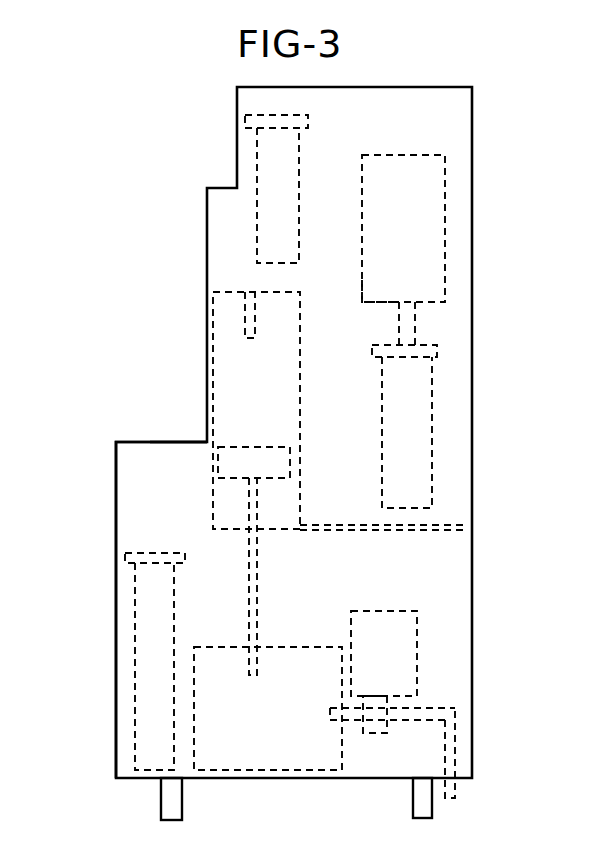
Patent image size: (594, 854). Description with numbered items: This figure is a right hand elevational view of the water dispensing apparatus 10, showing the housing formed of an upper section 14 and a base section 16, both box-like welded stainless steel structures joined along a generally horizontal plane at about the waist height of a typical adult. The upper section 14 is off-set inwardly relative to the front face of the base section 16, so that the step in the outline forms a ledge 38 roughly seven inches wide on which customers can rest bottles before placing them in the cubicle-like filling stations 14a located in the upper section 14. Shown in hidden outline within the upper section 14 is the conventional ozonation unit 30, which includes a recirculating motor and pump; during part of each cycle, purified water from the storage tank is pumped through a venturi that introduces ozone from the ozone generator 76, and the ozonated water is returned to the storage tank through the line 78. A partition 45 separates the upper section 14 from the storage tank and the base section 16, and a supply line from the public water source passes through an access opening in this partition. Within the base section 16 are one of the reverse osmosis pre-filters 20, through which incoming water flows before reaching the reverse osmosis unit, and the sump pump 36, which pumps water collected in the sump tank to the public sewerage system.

The water dispensing apparatus 10 is at (502, 302).
The upper section 14 is at (442, 135).
The filling stations 14a is at (232, 325).
The base section 16 is at (155, 498).
The reverse osmosis pre-filter 20 is at (147, 747).
The ozonation unit 30 is at (448, 229).
The sump pump 36 is at (272, 735).
The ledge 38 is at (168, 442).
The partition 45 is at (427, 523).
The ozone generator 76 is at (365, 288).
The carbon filter / line 78 is at (264, 154).